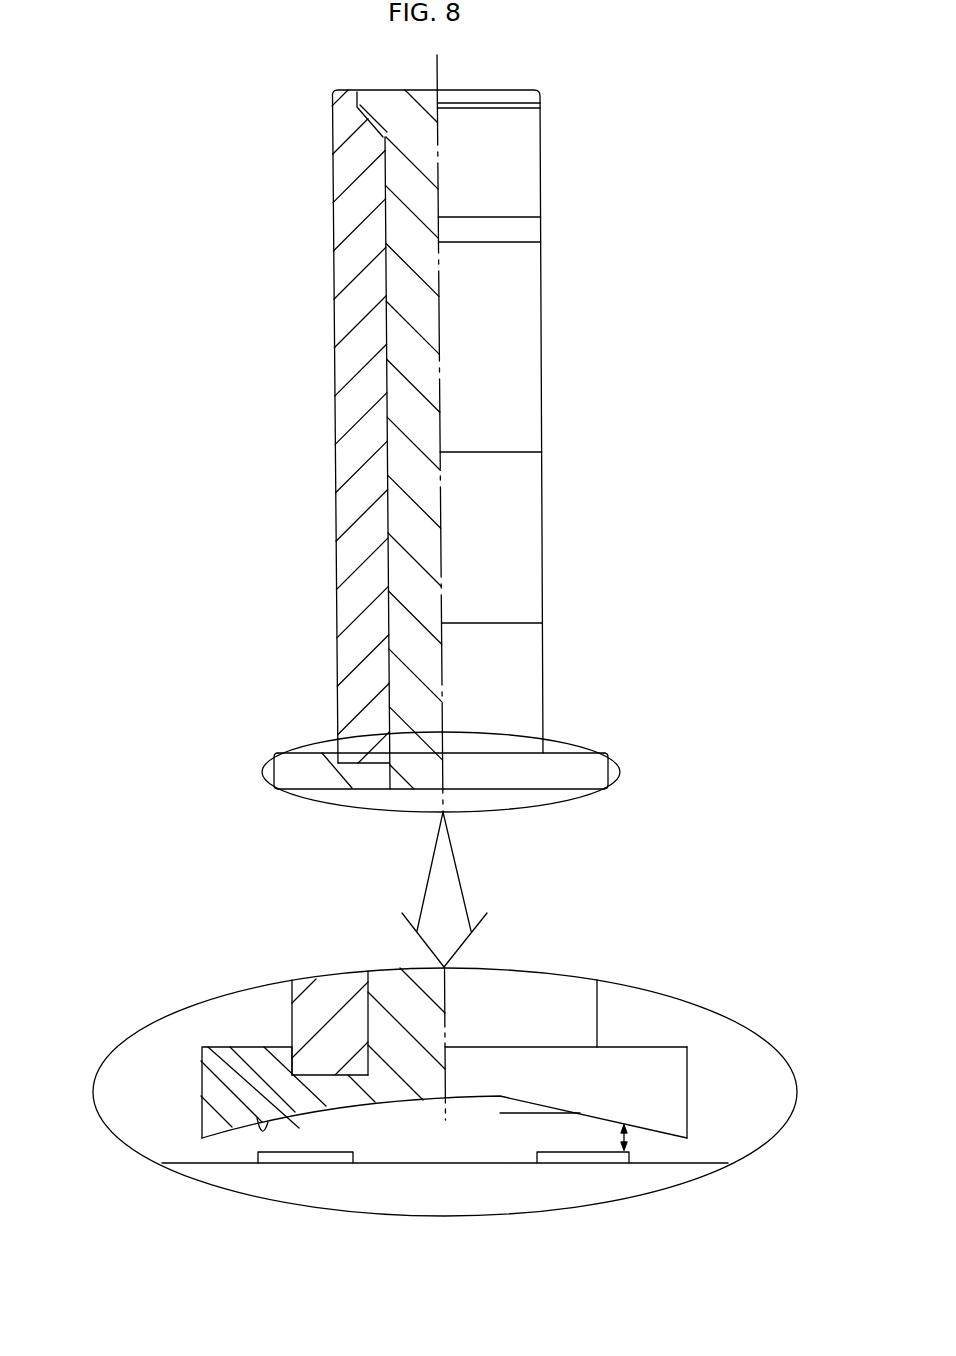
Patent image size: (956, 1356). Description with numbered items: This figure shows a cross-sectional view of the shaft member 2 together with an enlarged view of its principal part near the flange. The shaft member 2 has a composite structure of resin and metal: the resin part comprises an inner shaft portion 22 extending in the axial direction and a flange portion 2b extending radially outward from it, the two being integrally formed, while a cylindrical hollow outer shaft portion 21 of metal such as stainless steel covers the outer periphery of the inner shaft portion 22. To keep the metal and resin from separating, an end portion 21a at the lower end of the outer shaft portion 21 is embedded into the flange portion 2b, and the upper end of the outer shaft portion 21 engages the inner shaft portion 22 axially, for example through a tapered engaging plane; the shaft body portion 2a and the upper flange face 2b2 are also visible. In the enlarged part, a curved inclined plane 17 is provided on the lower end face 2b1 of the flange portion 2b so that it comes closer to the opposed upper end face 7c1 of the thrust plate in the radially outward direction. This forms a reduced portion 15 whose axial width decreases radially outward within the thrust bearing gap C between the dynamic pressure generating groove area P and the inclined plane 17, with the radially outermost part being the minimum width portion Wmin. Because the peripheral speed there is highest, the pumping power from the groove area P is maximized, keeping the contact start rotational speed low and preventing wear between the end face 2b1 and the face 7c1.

The shaft member 2 is at (230, 246).
The clamp body portion 2a is at (548, 319).
The flange portion 2b is at (597, 770).
The lower end face 2b1 is at (555, 790).
The flange upper surface 2b2 is at (567, 753).
The outer shaft portion 21 is at (347, 657).
The end portion 21a is at (380, 122).
The inner shaft portion 22 is at (405, 412).
The reduced portion 15 is at (262, 1122).
The inclined plane 17 is at (201, 1061).
The upper end face 7c1 is at (700, 1163).
The thrust bearing gap C is at (287, 1149).
The dynamic pressure generating groove area P is at (346, 1143).
The minimum width portion Wmin is at (622, 1137).